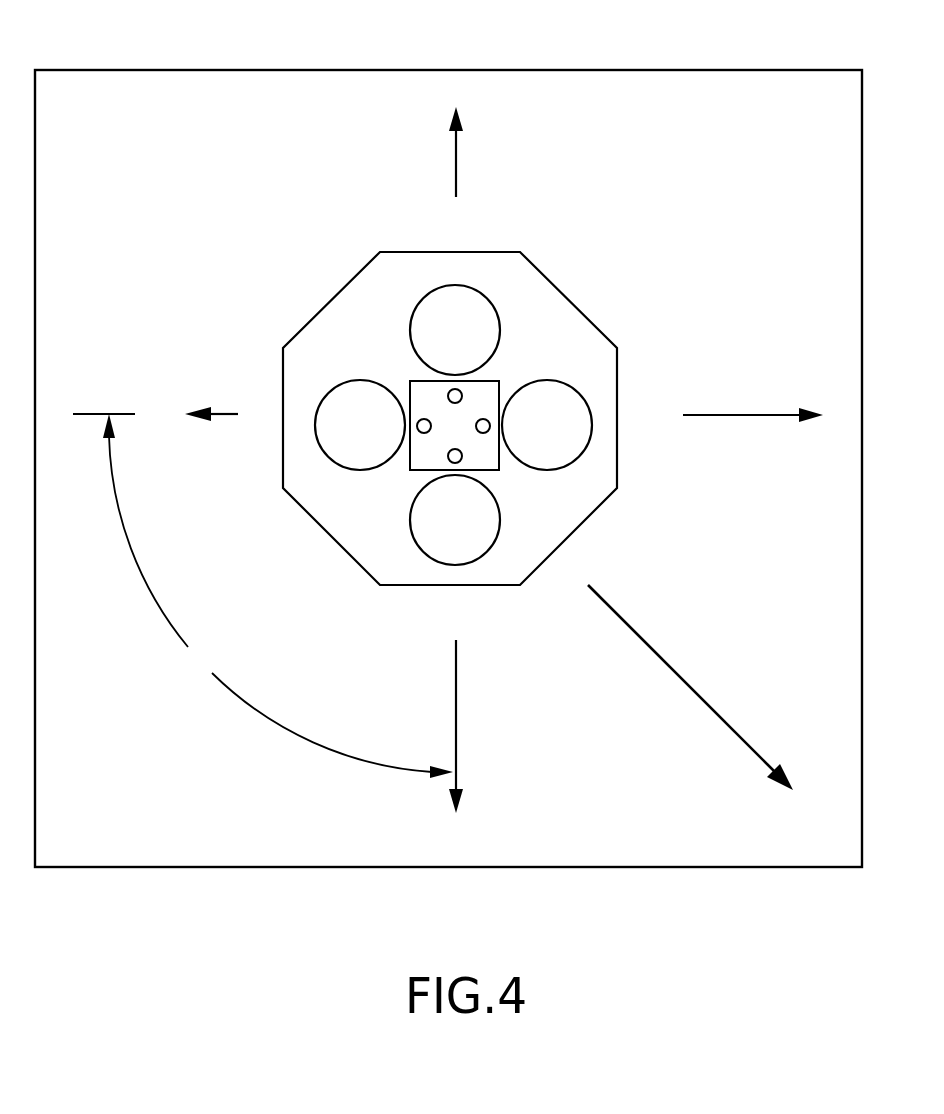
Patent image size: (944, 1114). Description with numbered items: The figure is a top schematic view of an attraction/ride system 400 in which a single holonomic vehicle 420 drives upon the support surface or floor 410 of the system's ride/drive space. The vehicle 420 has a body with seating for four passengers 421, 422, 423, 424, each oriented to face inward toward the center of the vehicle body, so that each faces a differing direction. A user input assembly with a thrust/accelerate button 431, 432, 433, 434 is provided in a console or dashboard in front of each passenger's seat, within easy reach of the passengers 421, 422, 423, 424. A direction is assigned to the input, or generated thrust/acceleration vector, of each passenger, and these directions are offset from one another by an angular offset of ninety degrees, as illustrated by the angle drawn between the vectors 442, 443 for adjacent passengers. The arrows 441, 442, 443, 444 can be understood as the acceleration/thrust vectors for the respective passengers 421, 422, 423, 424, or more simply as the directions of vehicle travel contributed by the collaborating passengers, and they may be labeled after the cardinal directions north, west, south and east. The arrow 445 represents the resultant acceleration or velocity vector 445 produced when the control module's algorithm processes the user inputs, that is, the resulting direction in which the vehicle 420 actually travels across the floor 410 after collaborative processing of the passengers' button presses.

The attraction/ride system 400 is at (600, 161).
The support surface or floor 410 is at (729, 70).
The holonomic vehicle 420 is at (495, 243).
The passenger 421 is at (437, 365).
The passenger 422 is at (342, 460).
The passenger 423 is at (437, 555).
The passenger 424 is at (529, 460).
The thrust/accelerate button 431 is at (462, 394).
The thrust/accelerate button 432 is at (423, 419).
The thrust/accelerate button 433 is at (448, 457).
The thrust/accelerate button 434 is at (484, 434).
The acceleration/thrust vector arrow 441 is at (456, 154).
The acceleration/thrust vector arrow 442 is at (223, 416).
The acceleration/thrust vector arrow 443 is at (456, 665).
The acceleration/thrust vector arrow 444 is at (726, 417).
The resultant acceleration or velocity vector 445 is at (667, 613).